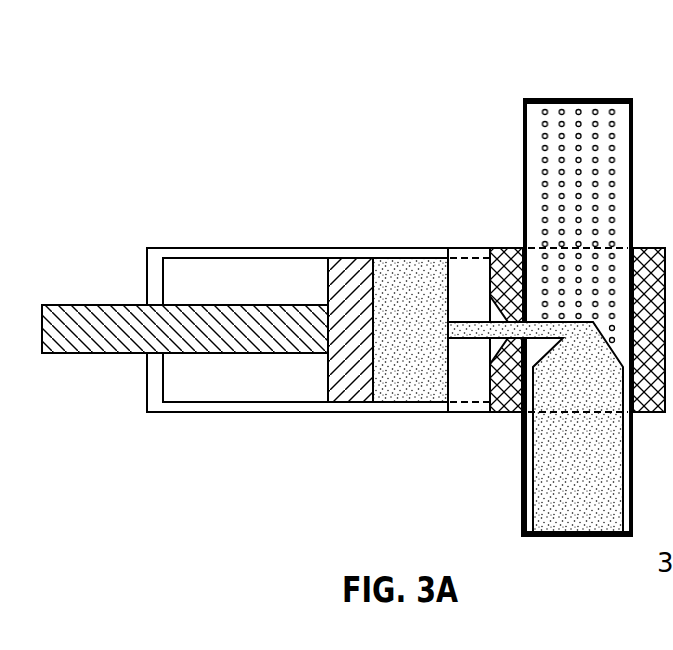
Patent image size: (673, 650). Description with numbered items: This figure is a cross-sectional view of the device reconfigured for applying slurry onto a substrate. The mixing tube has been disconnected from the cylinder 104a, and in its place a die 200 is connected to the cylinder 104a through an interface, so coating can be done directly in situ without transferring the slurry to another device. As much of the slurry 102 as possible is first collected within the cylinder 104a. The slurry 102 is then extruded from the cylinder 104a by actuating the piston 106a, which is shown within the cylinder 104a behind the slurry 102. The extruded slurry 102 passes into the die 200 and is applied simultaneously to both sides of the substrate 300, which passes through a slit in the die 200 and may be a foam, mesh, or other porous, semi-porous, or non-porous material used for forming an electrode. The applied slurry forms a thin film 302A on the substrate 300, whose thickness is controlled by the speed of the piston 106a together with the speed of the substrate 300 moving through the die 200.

The cylinder 104a is at (193, 247).
The piston 106a is at (346, 268).
The slurry 102 is at (417, 268).
The die 200 is at (502, 413).
The substrate 300 is at (548, 100).
The thin film 302A is at (555, 494).